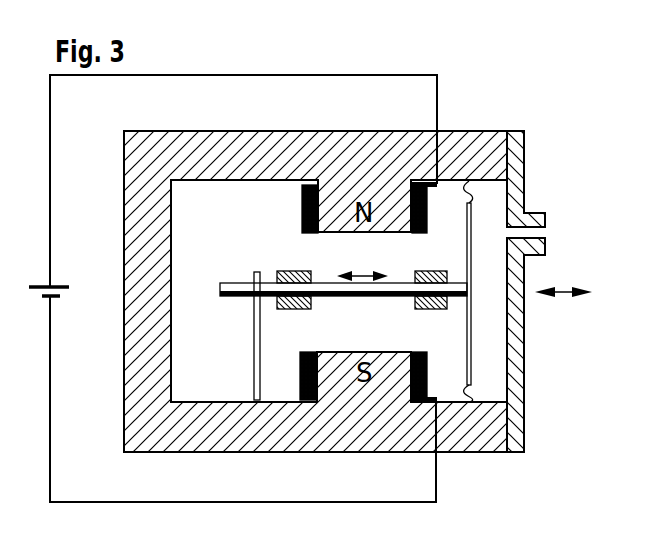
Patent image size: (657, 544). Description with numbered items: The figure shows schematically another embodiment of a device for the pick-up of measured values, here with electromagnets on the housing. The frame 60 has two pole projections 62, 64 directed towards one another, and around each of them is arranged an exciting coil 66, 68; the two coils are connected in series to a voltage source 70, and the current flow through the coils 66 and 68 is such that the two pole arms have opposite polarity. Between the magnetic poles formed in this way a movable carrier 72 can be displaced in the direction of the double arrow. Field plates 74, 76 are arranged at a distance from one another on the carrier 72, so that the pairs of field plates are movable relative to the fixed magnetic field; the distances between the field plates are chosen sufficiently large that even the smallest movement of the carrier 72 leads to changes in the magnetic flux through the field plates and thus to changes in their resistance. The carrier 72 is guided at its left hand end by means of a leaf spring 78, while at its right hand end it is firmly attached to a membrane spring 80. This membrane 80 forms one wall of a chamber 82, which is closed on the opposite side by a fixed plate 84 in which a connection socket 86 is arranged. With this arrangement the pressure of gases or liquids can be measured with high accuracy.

The frame 60 is at (340, 430).
The pole projection 62 is at (330, 215).
The pole projection 64 is at (330, 373).
The exciting coil 66 is at (428, 204).
The exciting coil 68 is at (428, 378).
The voltage source 70 is at (38, 284).
The carrier 72 is at (235, 288).
The field plate 74 is at (420, 270).
The field plate 76 is at (417, 305).
The leaf spring 78 is at (253, 323).
The membrane spring 80 is at (471, 240).
The chamber 82 is at (497, 343).
The fixed plate 84 is at (518, 152).
The connection socket 86 is at (530, 226).